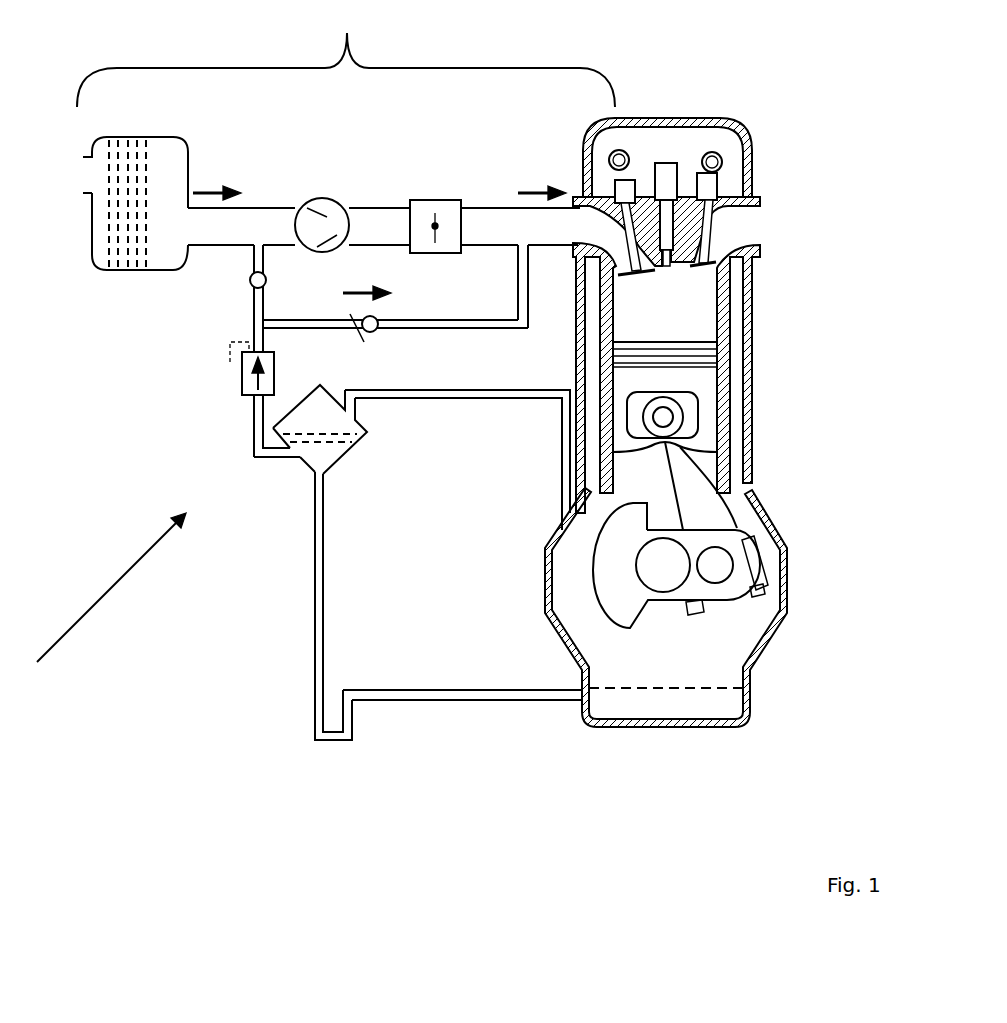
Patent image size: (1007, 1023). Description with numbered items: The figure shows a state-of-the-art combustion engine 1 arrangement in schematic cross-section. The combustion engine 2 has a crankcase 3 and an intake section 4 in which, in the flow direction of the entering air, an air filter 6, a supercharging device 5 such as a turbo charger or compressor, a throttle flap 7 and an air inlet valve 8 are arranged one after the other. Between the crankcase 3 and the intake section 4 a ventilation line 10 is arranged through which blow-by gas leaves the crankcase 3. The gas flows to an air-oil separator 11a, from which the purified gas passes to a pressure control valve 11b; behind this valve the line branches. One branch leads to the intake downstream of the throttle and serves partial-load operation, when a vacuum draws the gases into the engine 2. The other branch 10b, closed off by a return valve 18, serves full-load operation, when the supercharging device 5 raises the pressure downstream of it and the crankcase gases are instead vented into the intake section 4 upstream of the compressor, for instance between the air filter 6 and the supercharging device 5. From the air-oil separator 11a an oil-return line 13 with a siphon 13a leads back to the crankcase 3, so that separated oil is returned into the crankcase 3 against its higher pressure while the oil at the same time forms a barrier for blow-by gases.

The internal combustion engine 1 is at (103, 603).
The combustion engine 2 is at (752, 364).
The crankcase 3 is at (752, 514).
The intake section 4 is at (346, 56).
The supercharging device 5 is at (320, 215).
The air filter 6 is at (130, 255).
The throttle flap 7 is at (420, 212).
The air inlet valve 8 is at (613, 200).
The crankcase ventilation line 10 is at (252, 440).
The return line to intake 10b is at (262, 306).
The air-oil separator 11a is at (310, 456).
The pressure control valve 11b is at (240, 385).
The oil-return line 13 is at (445, 692).
The siphon 13a is at (333, 734).
The return valve 18 is at (250, 283).